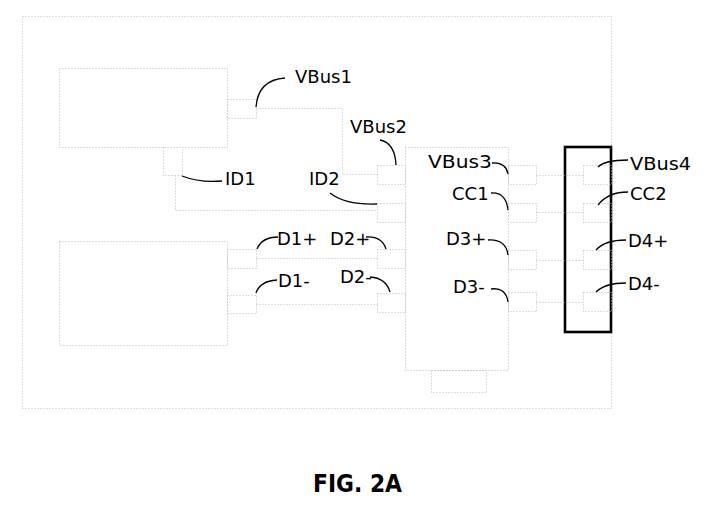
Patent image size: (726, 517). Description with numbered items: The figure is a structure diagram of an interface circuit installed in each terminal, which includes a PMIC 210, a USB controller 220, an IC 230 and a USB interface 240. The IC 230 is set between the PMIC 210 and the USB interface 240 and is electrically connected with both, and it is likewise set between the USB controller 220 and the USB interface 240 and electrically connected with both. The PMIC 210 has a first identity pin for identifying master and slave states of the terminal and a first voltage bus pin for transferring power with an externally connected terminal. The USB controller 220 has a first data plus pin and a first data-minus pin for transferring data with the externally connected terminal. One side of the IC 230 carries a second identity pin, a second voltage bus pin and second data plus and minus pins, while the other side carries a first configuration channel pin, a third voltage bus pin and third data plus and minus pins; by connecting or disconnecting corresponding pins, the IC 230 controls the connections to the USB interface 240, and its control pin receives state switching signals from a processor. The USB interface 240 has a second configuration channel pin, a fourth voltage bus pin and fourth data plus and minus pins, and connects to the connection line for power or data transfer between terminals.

The PMIC 210 is at (228, 84).
The USB controller 220 is at (168, 345).
The IC 230 is at (455, 147).
The USB interface 240 is at (586, 147).